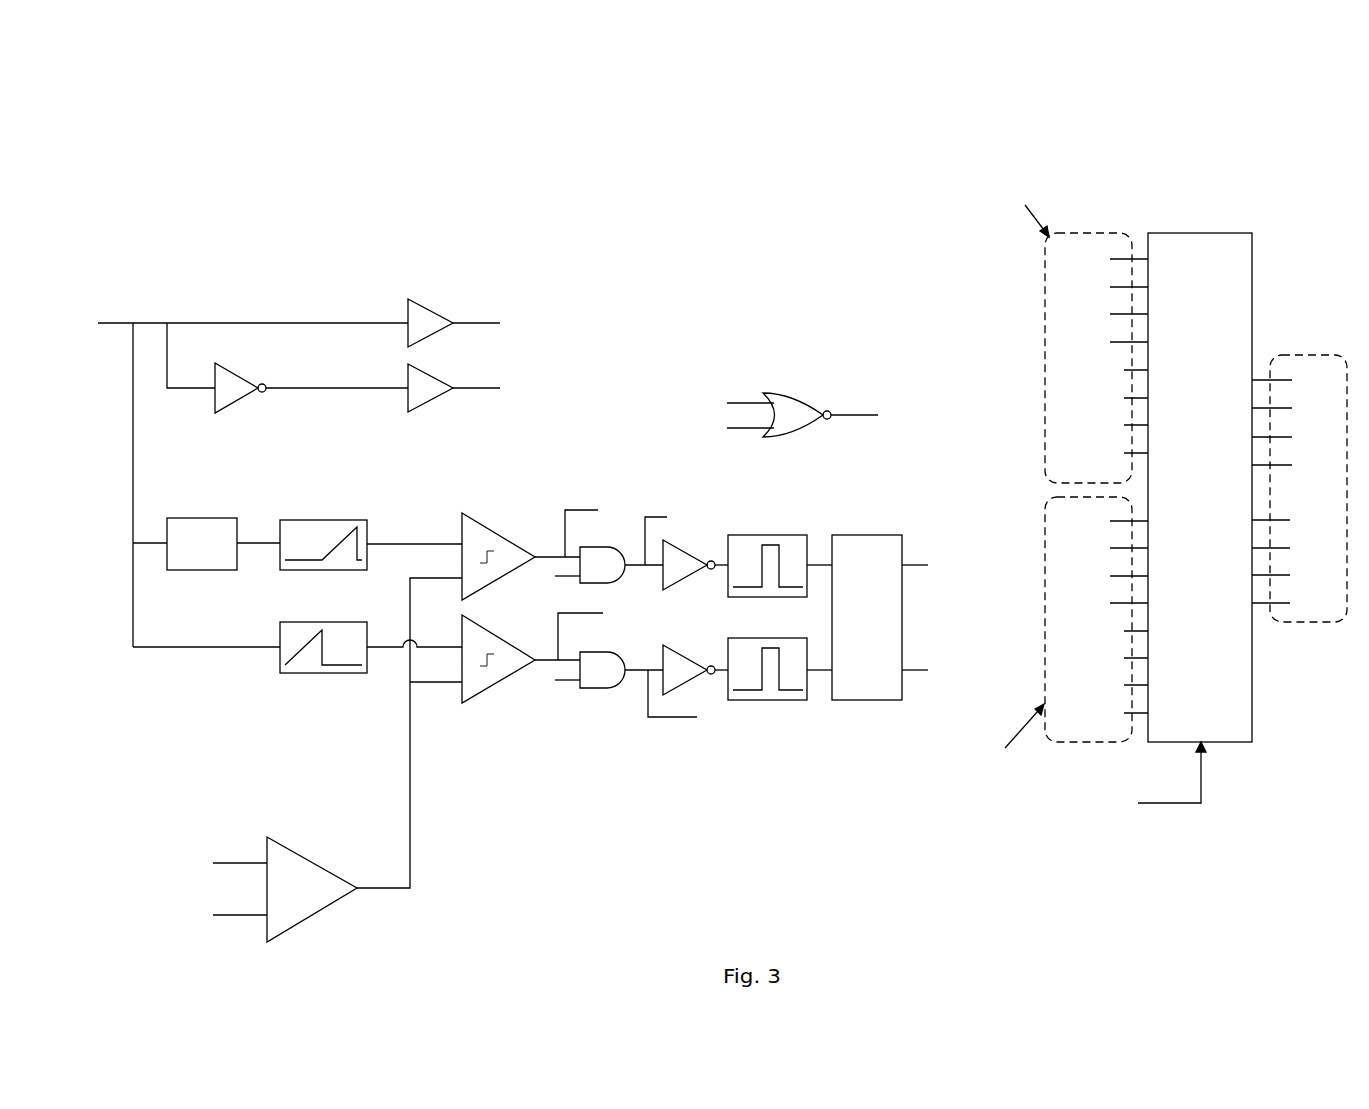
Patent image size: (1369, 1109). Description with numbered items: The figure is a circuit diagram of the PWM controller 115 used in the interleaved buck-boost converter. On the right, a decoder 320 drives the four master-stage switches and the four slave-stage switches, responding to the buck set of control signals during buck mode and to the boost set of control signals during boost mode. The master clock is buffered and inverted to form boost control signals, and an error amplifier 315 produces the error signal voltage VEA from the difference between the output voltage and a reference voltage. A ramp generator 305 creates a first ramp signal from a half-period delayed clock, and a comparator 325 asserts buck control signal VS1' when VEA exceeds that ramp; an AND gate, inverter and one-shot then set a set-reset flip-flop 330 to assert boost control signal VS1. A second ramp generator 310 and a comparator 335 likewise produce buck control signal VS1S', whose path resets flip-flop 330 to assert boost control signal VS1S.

The PWM controller 115 is at (649, 110).
The ramp generator 305 is at (367, 527).
The second ramp generator 310 is at (298, 673).
The error amplifier 315 is at (312, 915).
The decoder 320 is at (1253, 736).
The comparator 325 is at (505, 530).
The set-reset flip-flop 330 is at (890, 535).
The comparator 335 is at (482, 705).